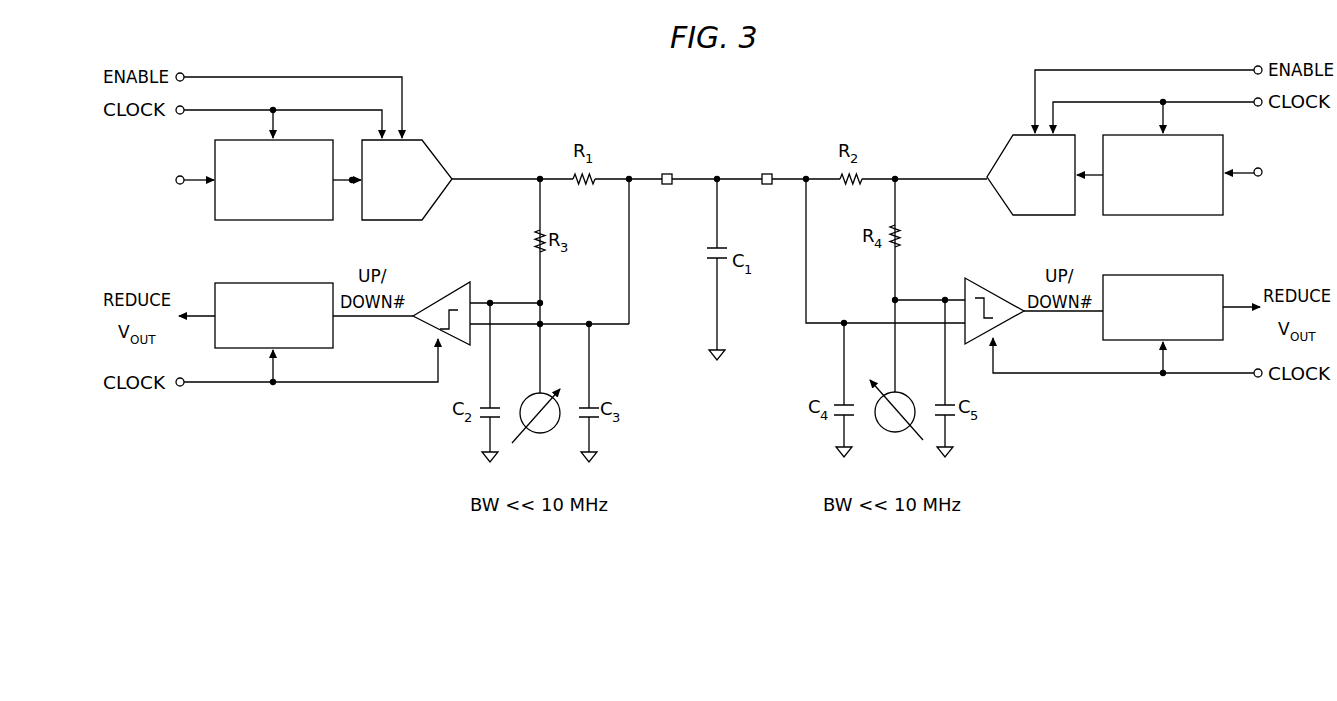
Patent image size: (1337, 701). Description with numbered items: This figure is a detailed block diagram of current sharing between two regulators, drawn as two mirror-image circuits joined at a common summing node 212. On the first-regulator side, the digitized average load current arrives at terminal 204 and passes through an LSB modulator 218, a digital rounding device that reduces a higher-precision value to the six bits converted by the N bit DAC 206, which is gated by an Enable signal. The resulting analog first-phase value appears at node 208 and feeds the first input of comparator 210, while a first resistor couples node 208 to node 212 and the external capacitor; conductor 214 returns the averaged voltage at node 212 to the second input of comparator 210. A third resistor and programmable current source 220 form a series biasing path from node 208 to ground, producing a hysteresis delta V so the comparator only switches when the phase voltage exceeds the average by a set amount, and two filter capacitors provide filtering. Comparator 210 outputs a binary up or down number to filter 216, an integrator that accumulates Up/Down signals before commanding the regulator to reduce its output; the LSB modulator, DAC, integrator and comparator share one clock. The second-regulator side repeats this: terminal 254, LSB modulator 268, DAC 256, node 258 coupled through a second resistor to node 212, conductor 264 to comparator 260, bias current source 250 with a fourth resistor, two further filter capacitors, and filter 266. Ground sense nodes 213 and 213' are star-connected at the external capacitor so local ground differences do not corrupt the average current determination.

The terminal 204 is at (176, 181).
The N bit digital to analog converter 206 is at (460, 150).
The node 208 is at (538, 186).
The comparator 210 is at (440, 292).
The node 212 is at (715, 184).
The ground sense node 213 is at (616, 473).
The ground sense node 213' is at (816, 469).
The conductor 214 is at (607, 322).
The filter 216 is at (258, 283).
The LSB modulator 218 is at (290, 221).
The current source 220 is at (534, 394).
The current source 250 is at (906, 393).
The terminal 254 is at (1262, 178).
The N bit digital to analog converter 256 is at (1000, 160).
The node 258 is at (899, 184).
The comparator 260 is at (996, 291).
The conductor 264 is at (826, 321).
The filter 266 is at (1180, 275).
The LSB modulator 268 is at (1147, 217).